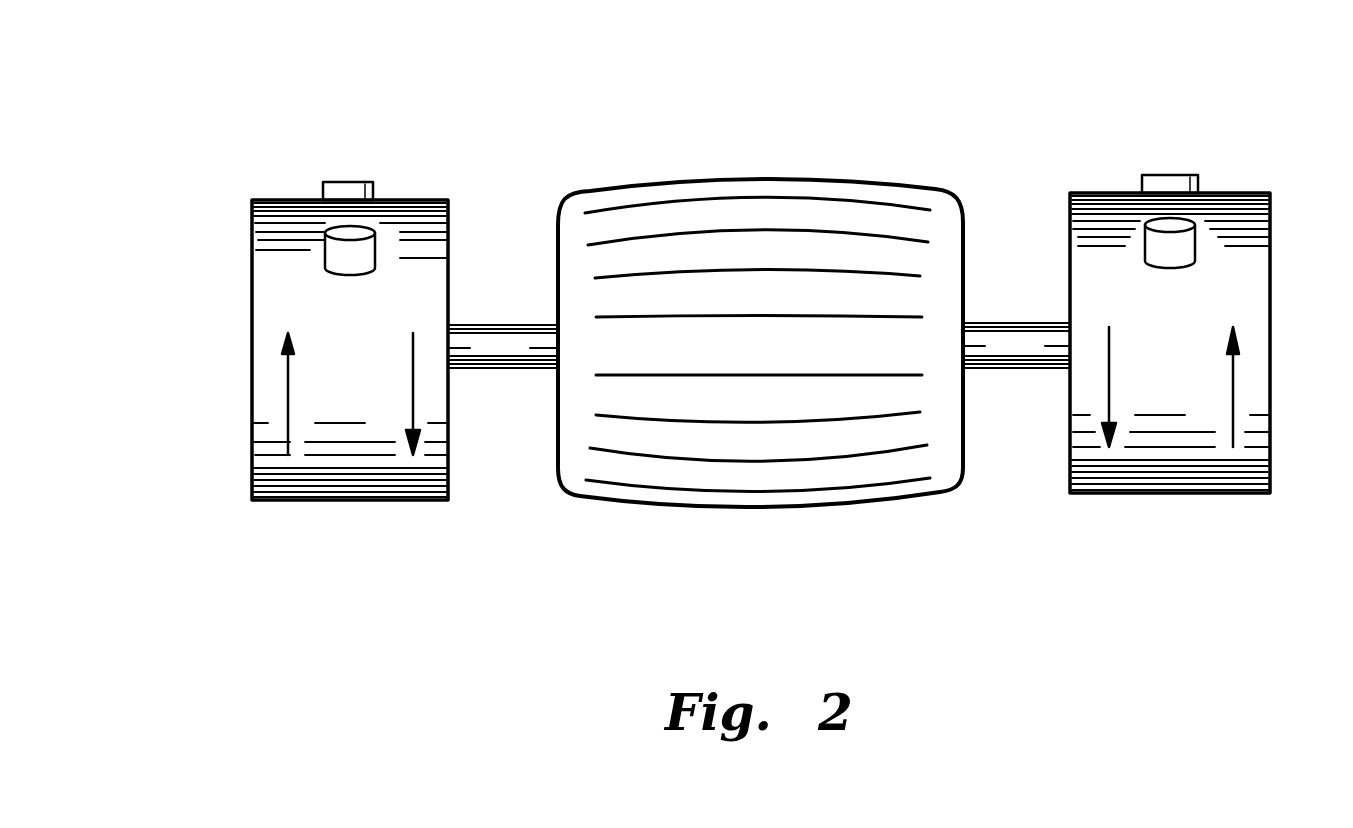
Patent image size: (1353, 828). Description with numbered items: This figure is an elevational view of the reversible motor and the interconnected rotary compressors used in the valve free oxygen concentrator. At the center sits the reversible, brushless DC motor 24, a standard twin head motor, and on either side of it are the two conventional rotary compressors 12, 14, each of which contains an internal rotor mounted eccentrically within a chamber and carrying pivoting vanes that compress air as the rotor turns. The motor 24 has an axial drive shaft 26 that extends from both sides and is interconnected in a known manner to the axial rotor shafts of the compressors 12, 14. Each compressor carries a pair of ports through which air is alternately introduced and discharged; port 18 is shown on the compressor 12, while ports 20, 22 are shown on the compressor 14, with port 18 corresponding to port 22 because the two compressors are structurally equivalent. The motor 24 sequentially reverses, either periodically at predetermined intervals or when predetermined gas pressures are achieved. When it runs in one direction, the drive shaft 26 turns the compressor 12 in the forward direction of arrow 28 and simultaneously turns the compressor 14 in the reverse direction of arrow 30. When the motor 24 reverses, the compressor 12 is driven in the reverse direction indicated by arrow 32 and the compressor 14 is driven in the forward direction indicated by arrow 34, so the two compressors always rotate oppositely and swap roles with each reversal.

The rotary compressor 12 is at (348, 503).
The rotary compressor 14 is at (1195, 496).
The port 18 is at (378, 187).
The port 20 is at (1200, 247).
The port 22 is at (1200, 177).
The reversible brushless DC motor 24 is at (766, 178).
The axial drive shaft 26 is at (495, 372).
The arrow 28 is at (413, 363).
The arrow 30 is at (1105, 390).
The arrow 32 is at (280, 408).
The arrow 34 is at (1233, 393).